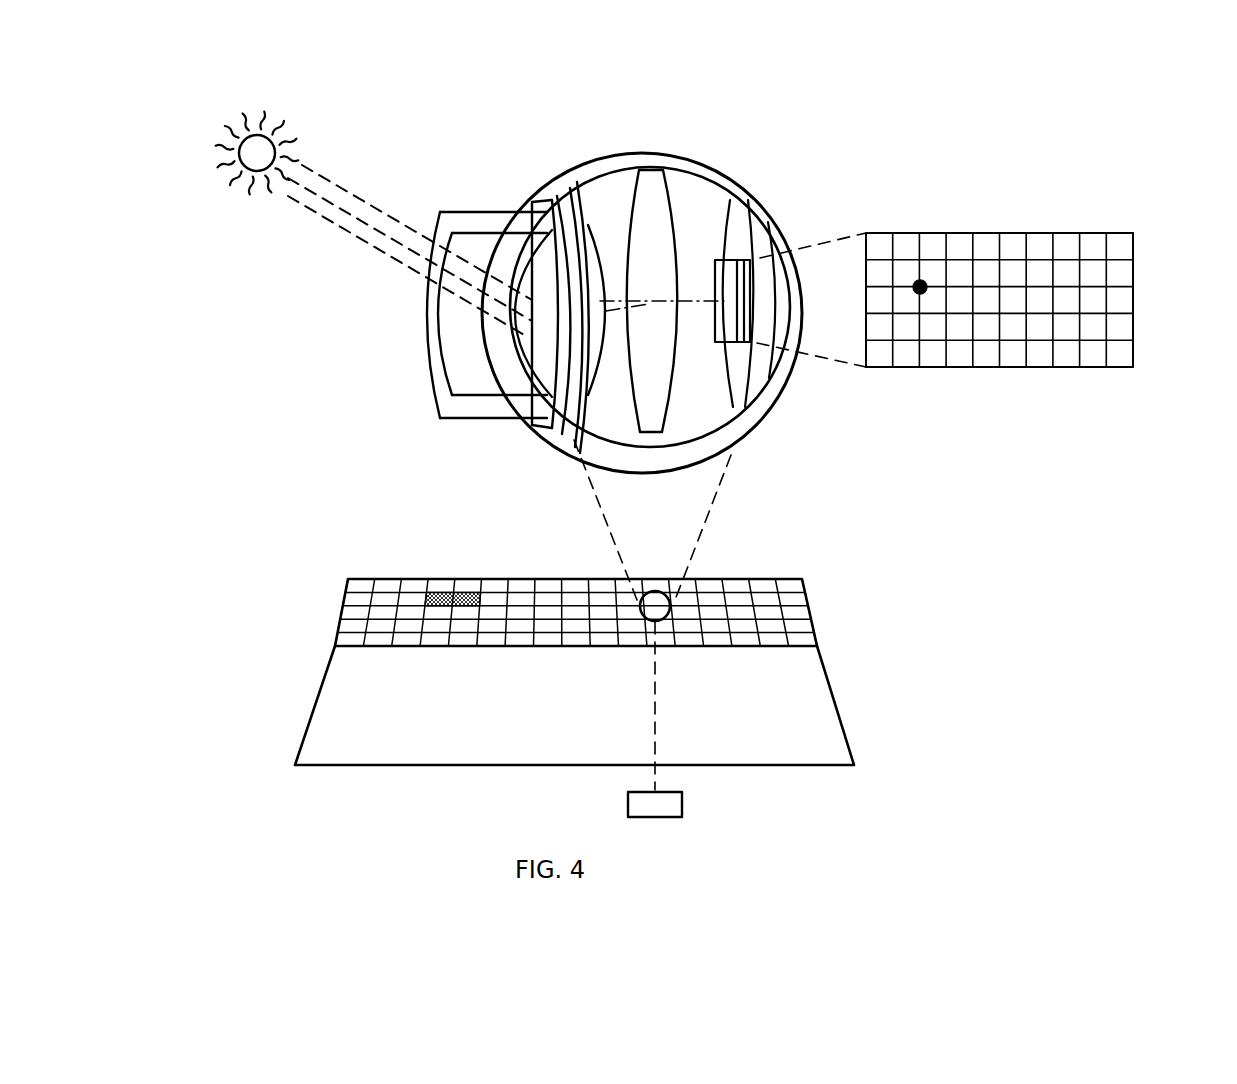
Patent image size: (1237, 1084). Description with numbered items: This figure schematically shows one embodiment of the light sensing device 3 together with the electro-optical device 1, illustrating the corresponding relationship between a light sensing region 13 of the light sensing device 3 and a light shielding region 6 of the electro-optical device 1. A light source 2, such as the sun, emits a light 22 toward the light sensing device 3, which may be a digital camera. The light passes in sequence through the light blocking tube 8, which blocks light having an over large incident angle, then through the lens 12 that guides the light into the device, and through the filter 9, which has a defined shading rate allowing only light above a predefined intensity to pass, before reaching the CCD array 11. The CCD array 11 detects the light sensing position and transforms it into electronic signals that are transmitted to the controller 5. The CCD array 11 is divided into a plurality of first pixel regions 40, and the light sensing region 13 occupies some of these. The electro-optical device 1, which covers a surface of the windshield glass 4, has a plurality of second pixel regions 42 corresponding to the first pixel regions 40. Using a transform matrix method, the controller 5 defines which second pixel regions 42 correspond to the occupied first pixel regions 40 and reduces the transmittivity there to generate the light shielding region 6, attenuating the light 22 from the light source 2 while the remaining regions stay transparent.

The electro-optical device 1 is at (783, 613).
The light source 2 is at (268, 152).
The light sensing device 3 is at (758, 188).
The windshield glass 4 is at (823, 700).
The controller 5 is at (683, 805).
The light shielding region 6 is at (470, 592).
The light blocking tube 8 is at (492, 218).
The filter 9 is at (645, 207).
The CCD array 11 is at (725, 282).
The lens 12 is at (534, 276).
The light sensing region 13 is at (916, 283).
The light 22 is at (362, 236).
The first pixel regions 40 is at (1040, 367).
The second pixel regions 42 is at (443, 587).